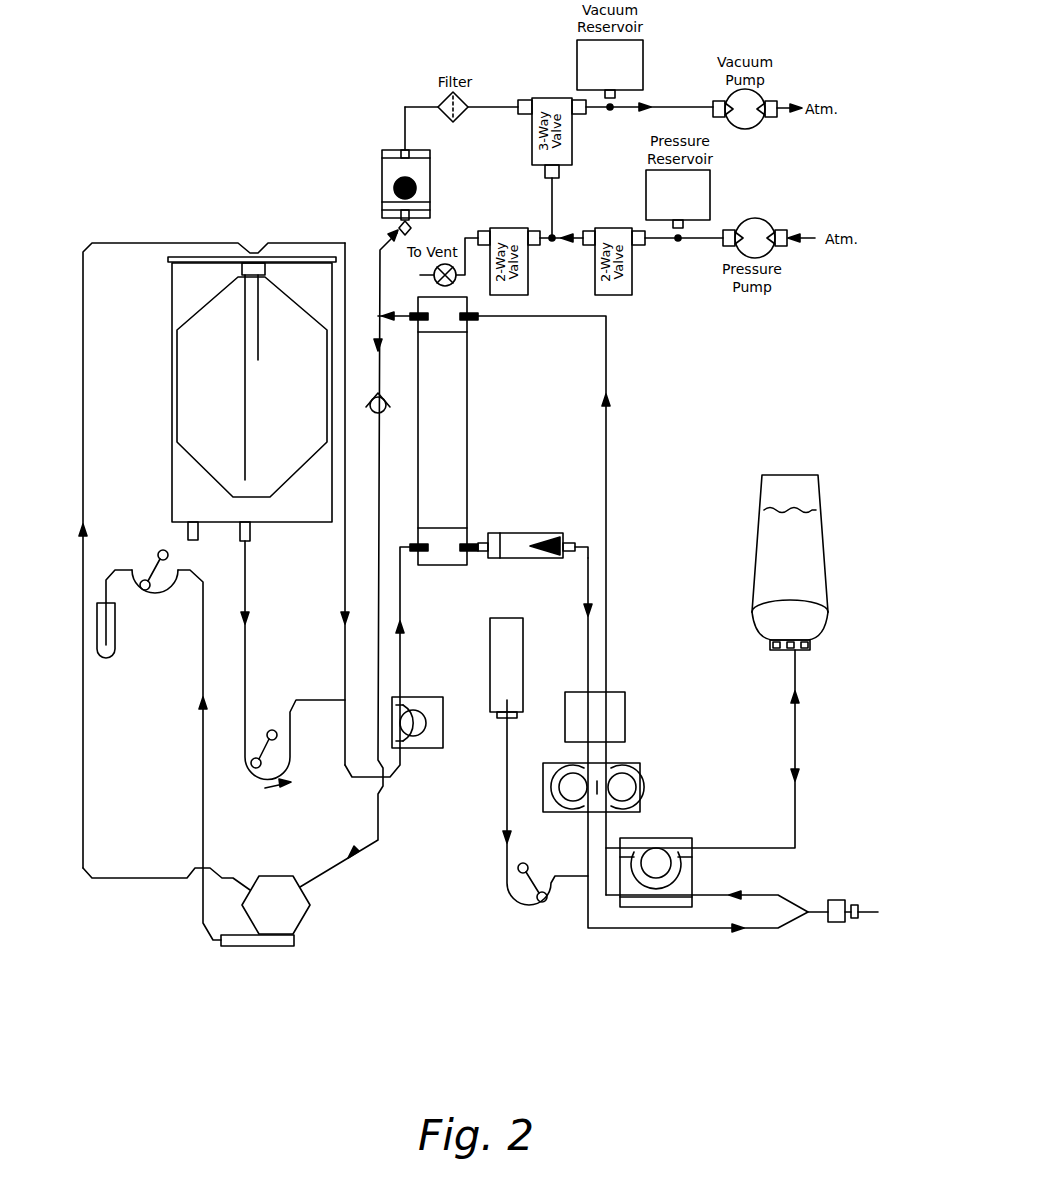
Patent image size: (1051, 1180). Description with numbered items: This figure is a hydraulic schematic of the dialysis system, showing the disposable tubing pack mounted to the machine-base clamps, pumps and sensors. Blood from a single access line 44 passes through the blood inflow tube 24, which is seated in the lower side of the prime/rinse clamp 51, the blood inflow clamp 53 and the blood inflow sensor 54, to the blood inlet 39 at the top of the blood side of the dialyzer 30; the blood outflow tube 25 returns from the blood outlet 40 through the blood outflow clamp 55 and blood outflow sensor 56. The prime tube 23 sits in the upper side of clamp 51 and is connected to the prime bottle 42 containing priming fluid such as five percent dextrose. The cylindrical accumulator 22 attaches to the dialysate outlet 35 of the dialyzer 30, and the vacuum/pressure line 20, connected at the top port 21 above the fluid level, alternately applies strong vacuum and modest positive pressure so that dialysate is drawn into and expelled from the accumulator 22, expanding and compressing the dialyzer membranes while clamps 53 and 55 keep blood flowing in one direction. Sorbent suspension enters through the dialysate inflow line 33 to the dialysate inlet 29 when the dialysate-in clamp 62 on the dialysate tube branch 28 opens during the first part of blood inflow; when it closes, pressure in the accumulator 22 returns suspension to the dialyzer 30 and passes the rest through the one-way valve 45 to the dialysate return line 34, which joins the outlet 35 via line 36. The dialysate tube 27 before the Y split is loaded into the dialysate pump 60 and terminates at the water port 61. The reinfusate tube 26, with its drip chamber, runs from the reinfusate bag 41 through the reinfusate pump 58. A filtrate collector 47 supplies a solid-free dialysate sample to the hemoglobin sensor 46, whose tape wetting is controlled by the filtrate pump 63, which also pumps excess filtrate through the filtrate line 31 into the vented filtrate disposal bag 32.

The vacuum/pressure line 20 is at (403, 107).
The top port 21 is at (403, 148).
The accumulator 22 is at (380, 180).
The prime tube 23 is at (800, 732).
The blood inflow tube 24 is at (785, 900).
The blood outflow tube 25 is at (752, 928).
The reinfusate tube 26 is at (505, 820).
The dialysate tube 27 is at (245, 660).
The branch of dialysate tube 28 is at (402, 762).
The dialysate inlet 29 is at (408, 562).
The dialyzer 30 is at (460, 375).
The filtrate line 31 is at (203, 757).
The filtrate disposal bag 32 is at (116, 640).
The dialysate inflow line 33 is at (343, 603).
The dialysate return line 34 is at (83, 278).
The dialysate outlet 35 is at (412, 322).
The line 36 is at (390, 297).
The blood inlet 39 is at (478, 316).
The blood outlet 40 is at (475, 542).
The reinfusate bag 41 is at (490, 688).
The prime bottle 42 is at (753, 558).
The access line 44 is at (858, 908).
The one-way valve 45 is at (382, 415).
The hemoglobin sensor 46 is at (265, 947).
The filtrate collector 47 is at (305, 920).
The prime/rinse clamp 51 is at (692, 843).
The blood inflow clamp 53 is at (642, 792).
The blood inflow sensor 54 is at (626, 725).
The blood outflow clamp 55 is at (565, 766).
The blood outflow sensor 56 is at (575, 692).
The reinfusate pump 58 is at (522, 908).
The dialysate pump 60 is at (258, 782).
The water port 61 is at (252, 535).
The dialysate-in clamp 62 is at (445, 738).
The filtrate pump 63 is at (140, 566).